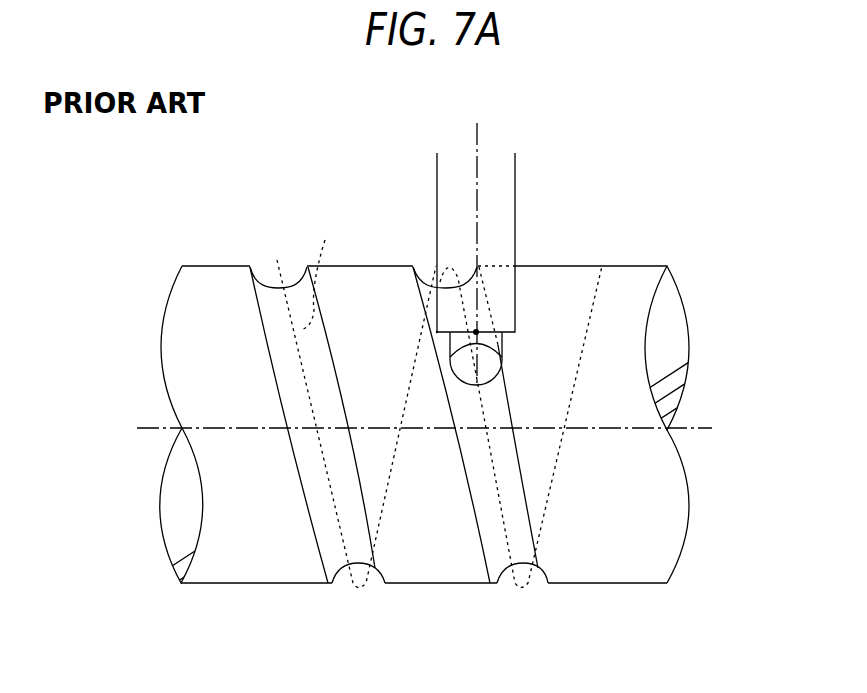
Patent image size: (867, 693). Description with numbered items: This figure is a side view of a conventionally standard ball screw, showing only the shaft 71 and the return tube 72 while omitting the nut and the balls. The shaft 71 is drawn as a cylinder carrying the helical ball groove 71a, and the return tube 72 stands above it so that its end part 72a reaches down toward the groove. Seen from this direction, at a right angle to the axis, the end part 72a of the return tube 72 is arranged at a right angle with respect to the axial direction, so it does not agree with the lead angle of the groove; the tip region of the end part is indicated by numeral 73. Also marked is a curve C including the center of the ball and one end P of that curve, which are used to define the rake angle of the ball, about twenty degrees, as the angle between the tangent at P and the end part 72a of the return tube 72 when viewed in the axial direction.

The shaft 71 is at (215, 282).
The thread groove 71a is at (339, 585).
The return tube 72 is at (447, 172).
The end part of the return tube 72a is at (505, 312).
The cutting edge 73 is at (493, 366).
The curve including the center of the ball C is at (319, 274).
The end of the curve P is at (436, 332).